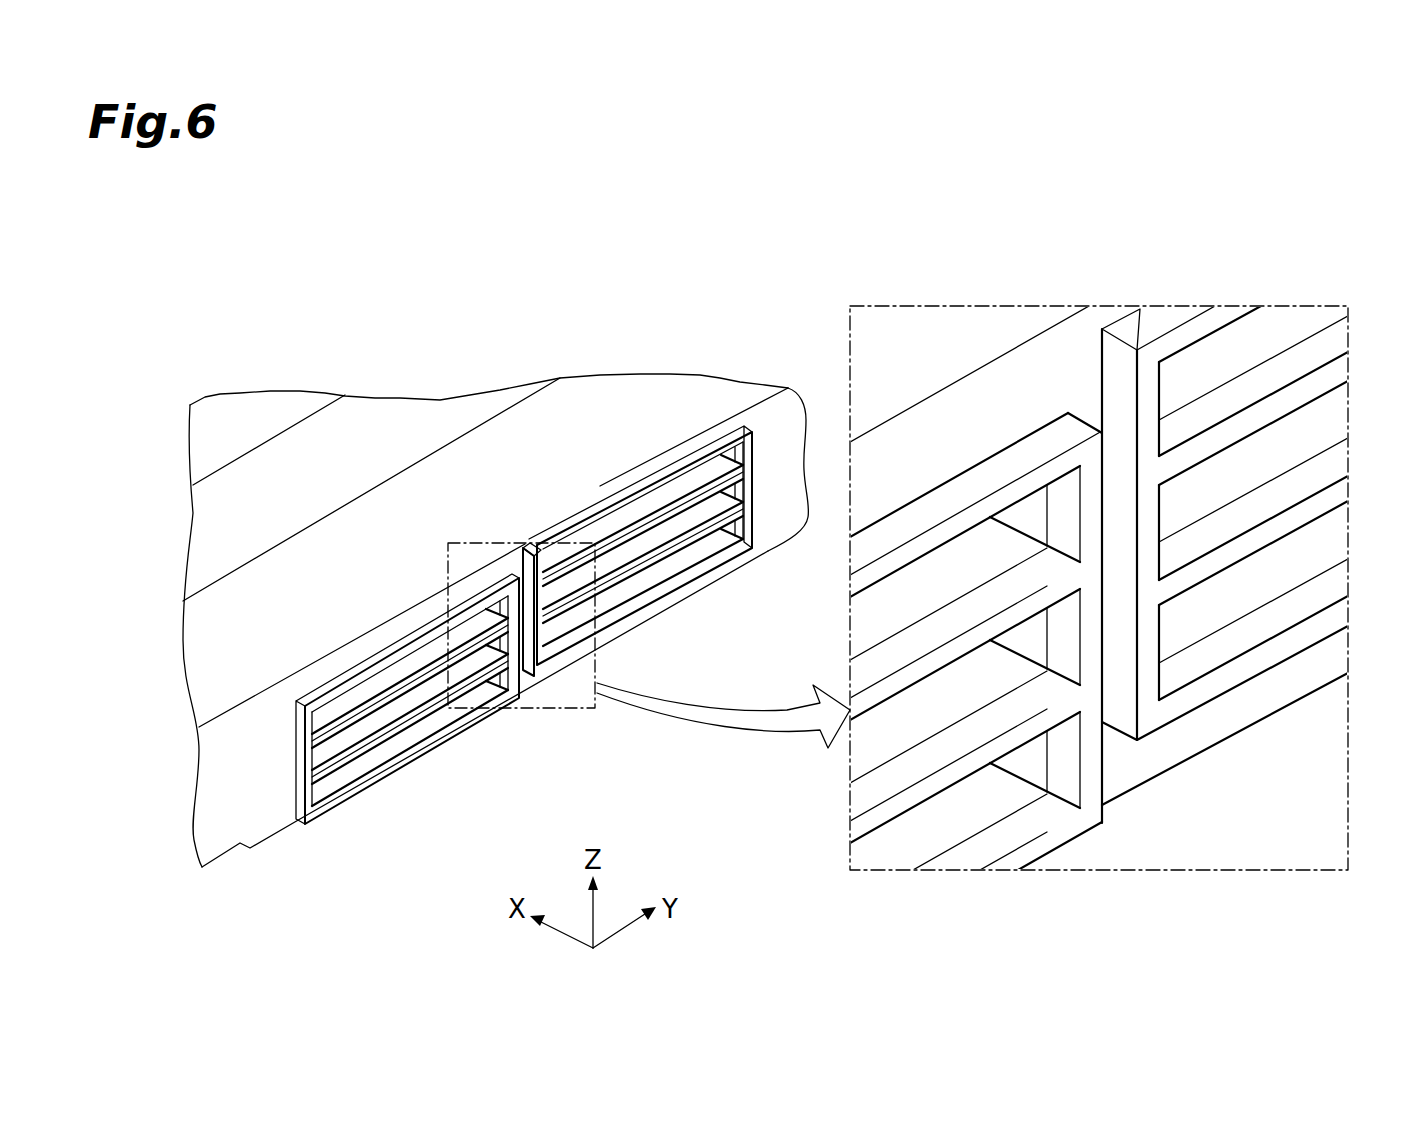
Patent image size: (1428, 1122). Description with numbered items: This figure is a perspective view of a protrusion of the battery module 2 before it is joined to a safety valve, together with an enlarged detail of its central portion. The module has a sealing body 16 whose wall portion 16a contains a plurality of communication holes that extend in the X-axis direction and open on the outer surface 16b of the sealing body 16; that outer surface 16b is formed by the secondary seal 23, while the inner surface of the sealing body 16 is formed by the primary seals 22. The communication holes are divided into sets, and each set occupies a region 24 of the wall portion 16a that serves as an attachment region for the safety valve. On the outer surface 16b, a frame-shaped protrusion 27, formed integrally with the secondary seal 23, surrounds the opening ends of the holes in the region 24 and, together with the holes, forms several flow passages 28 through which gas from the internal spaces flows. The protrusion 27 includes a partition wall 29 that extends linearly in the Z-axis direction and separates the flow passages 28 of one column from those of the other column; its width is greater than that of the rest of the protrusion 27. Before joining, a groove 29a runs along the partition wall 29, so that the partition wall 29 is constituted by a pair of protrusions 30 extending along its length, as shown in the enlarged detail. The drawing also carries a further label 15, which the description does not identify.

The battery module 2 is at (279, 357).
The upper wall 15 is at (232, 425).
The sealing body 16 is at (642, 387).
The wall portion 16a is at (210, 793).
The outer surface 16b is at (775, 435).
The primary seal 22 is at (410, 420).
The secondary seal 23 is at (210, 660).
The region 24 is at (387, 632).
The protrusion 27 is at (352, 652).
The flow passage 28 is at (385, 745).
The partition wall 29 is at (521, 547).
The groove 29a is at (1113, 697).
The protrusion 30 is at (1091, 472).